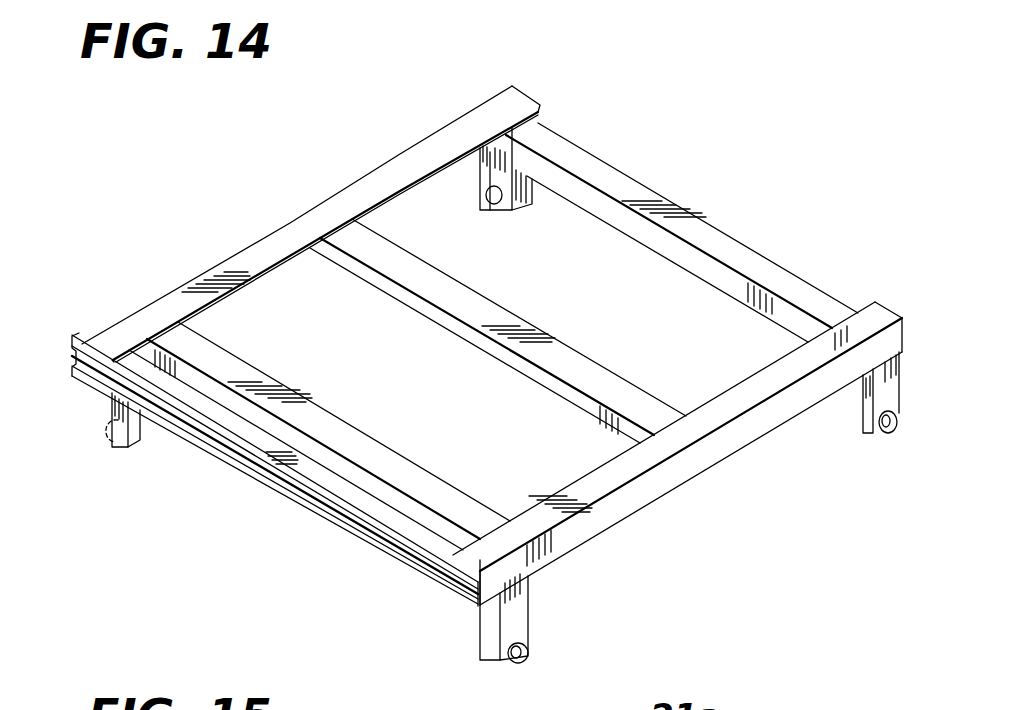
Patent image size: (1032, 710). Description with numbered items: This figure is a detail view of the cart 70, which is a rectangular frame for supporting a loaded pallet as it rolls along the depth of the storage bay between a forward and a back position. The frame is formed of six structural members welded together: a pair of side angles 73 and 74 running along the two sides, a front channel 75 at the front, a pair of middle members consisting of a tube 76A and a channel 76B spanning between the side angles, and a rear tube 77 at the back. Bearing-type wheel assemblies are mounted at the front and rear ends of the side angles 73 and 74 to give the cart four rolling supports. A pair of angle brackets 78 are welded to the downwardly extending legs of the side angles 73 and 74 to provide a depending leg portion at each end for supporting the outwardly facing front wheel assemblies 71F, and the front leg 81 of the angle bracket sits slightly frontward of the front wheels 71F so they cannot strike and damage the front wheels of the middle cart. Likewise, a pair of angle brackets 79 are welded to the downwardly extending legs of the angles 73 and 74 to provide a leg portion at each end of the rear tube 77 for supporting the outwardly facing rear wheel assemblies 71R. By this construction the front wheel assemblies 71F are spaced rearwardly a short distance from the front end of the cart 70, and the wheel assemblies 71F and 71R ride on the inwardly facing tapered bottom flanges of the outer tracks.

The cart 70 is at (684, 184).
The side angle 73 is at (242, 257).
The rear tube 77 is at (740, 247).
The side angle 74 is at (692, 460).
The front channel 75 is at (322, 494).
The tube 76A is at (385, 458).
The channel 76B is at (565, 351).
The rear wheel assembly 71R is at (497, 205).
The front wheel assembly 71F is at (527, 653).
The angle bracket 78 is at (135, 443).
The angle bracket 79 is at (873, 388).
The front leg 81 is at (480, 630).